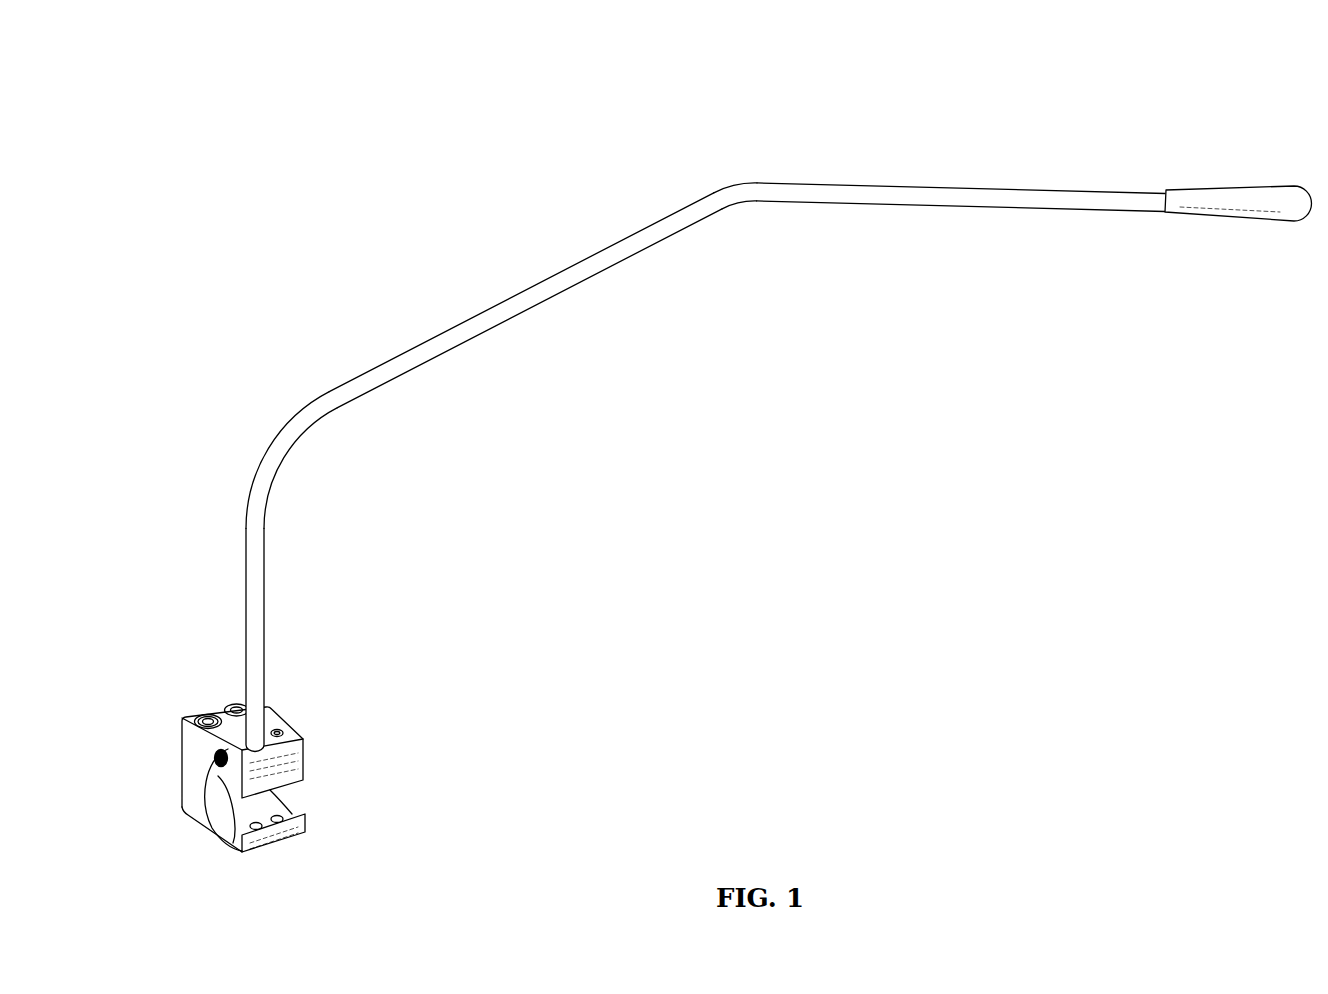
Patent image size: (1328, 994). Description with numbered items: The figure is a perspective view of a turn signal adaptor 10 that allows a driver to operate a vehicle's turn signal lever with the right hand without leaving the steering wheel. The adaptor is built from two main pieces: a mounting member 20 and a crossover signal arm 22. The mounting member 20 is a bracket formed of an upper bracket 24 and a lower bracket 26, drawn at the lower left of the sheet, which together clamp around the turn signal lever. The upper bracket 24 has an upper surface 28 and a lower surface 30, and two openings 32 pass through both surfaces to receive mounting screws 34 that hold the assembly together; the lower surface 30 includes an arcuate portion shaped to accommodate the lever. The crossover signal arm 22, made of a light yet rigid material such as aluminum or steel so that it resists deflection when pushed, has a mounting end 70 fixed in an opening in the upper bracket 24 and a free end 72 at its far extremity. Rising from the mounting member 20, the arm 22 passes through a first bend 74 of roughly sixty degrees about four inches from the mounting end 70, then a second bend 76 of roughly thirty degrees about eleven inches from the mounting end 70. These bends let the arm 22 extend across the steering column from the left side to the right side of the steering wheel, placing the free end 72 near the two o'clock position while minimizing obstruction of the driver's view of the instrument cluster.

The turn signal adaptor 10 is at (878, 124).
The mounting member 20 is at (296, 723).
The crossover signal arm 22 is at (705, 467).
The upper bracket 24 is at (193, 745).
The lower bracket 26 is at (217, 838).
The upper surface 28 is at (233, 700).
The lower surface 30 is at (195, 784).
The openings 32 is at (193, 716).
The mounting screws 34 is at (206, 714).
The mounting end 70 is at (304, 749).
The free end 72 is at (1152, 192).
The first bend 74 is at (282, 465).
The second bend 76 is at (744, 209).